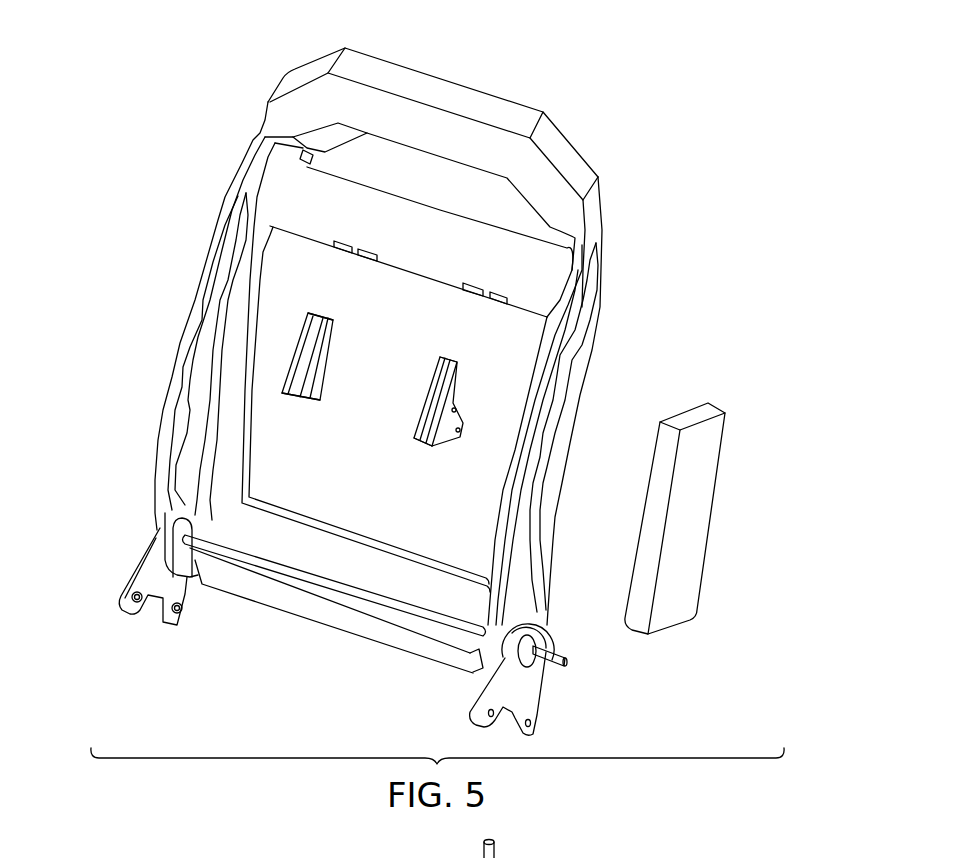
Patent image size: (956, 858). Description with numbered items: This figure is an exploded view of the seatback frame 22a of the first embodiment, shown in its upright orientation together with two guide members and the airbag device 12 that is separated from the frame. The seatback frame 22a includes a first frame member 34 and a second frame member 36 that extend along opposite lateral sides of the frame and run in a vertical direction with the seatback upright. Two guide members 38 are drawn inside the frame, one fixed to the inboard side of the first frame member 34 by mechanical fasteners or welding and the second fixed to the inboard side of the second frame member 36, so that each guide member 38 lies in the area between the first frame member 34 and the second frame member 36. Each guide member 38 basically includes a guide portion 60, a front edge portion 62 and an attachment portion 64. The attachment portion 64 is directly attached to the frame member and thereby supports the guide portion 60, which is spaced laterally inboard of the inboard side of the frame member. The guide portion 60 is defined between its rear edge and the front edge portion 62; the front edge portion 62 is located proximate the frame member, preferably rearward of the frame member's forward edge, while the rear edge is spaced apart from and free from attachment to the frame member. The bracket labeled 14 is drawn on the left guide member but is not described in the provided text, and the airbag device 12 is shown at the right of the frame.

The seatback frame 22a is at (372, 391).
The second frame member 36 is at (240, 314).
The first frame member 34 is at (553, 395).
The bracket 14 is at (388, 377).
The guide portion 60 is at (322, 362).
The guide member 38 is at (322, 312).
The attachment portion 64 is at (316, 313).
The front edge portion 62 is at (299, 402).
The airbag device 12 is at (684, 554).